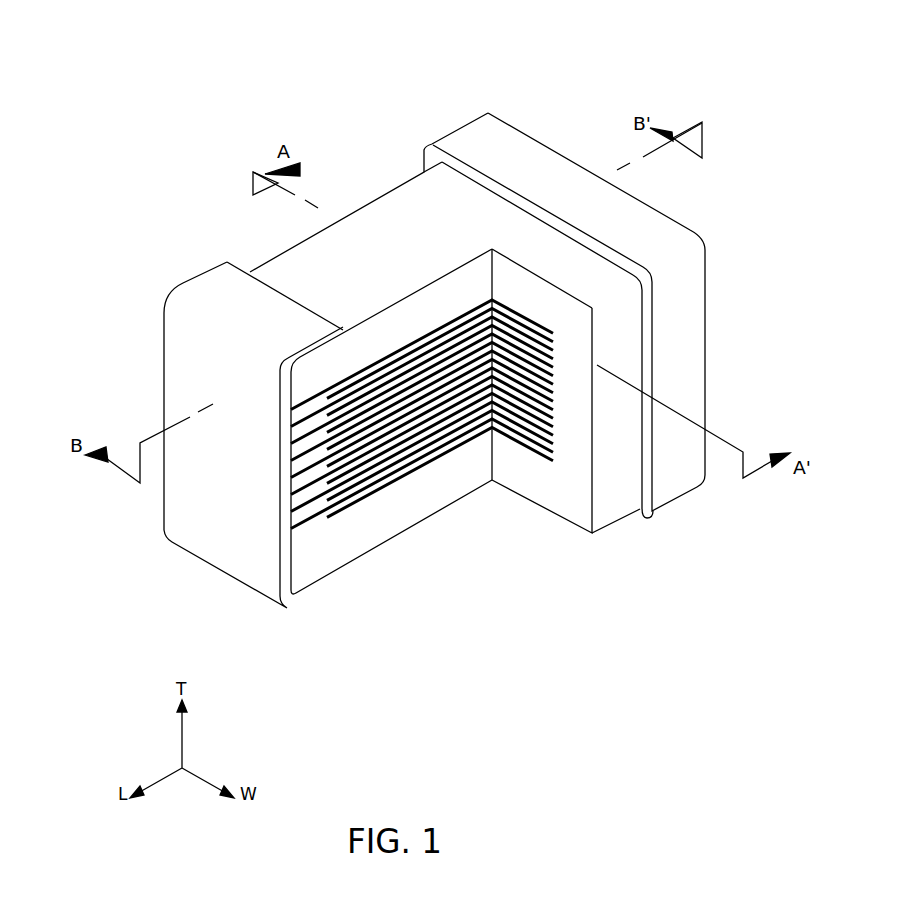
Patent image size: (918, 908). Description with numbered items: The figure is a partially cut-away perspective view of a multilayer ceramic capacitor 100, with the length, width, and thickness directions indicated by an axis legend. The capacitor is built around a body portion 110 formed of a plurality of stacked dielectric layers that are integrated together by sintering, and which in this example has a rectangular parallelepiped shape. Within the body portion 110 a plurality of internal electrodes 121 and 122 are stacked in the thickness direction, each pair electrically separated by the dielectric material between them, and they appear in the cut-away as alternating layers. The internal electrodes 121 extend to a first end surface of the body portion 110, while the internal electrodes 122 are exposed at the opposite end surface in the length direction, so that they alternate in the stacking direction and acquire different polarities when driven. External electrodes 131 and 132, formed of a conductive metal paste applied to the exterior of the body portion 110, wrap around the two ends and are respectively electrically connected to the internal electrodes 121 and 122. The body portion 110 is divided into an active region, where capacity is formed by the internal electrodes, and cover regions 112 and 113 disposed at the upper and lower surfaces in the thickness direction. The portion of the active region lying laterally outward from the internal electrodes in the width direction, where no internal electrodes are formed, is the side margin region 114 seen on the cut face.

The multilayer ceramic capacitor 100 is at (321, 34).
The body portion 110 is at (466, 199).
The cover region 112 is at (407, 327).
The cover region 113 is at (406, 510).
The side margin region 114 is at (571, 478).
The internal electrode 121 is at (303, 405).
The internal electrode 122 is at (357, 520).
The external electrode 131 is at (218, 298).
The external electrode 132 is at (518, 146).